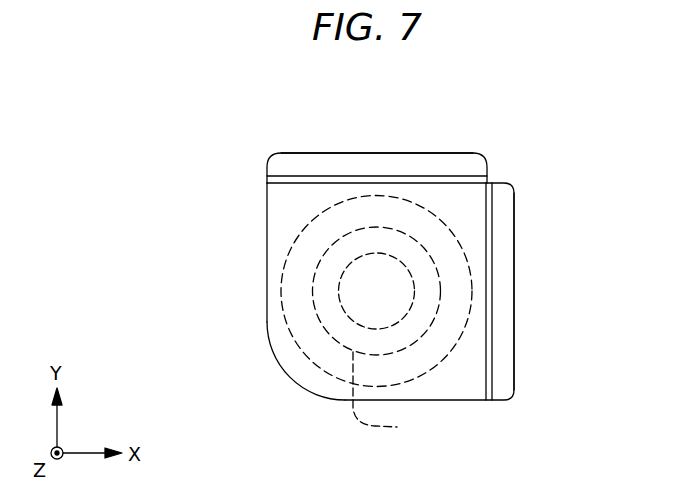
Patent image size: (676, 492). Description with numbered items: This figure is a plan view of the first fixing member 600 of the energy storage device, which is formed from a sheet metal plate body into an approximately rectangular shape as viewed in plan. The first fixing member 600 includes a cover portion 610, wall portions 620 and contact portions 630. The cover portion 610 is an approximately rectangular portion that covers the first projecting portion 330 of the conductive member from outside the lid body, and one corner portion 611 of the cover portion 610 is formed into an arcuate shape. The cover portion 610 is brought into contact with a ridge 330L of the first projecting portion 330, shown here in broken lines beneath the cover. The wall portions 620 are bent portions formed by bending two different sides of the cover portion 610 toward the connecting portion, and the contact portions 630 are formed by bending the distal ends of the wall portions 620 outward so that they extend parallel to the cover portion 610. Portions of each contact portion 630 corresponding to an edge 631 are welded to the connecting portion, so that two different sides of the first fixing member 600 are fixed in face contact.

The first fixing member 600 is at (315, 82).
The cover portion 610 is at (276, 233).
The corner portion 611 is at (297, 381).
The wall portions 620 is at (280, 183).
The contact portions 630 is at (442, 158).
The edge 631 is at (414, 157).
The first projecting portion 330 is at (296, 303).
The ridge 330L is at (402, 397).